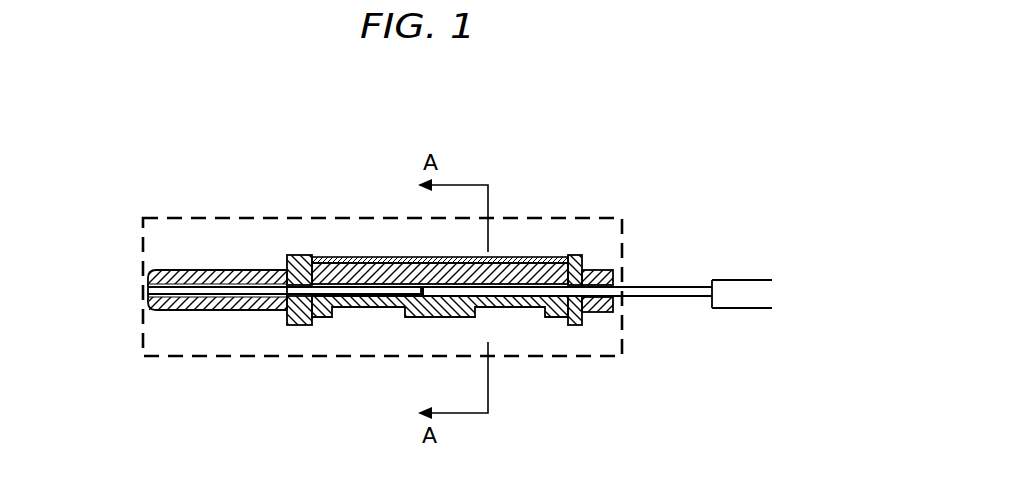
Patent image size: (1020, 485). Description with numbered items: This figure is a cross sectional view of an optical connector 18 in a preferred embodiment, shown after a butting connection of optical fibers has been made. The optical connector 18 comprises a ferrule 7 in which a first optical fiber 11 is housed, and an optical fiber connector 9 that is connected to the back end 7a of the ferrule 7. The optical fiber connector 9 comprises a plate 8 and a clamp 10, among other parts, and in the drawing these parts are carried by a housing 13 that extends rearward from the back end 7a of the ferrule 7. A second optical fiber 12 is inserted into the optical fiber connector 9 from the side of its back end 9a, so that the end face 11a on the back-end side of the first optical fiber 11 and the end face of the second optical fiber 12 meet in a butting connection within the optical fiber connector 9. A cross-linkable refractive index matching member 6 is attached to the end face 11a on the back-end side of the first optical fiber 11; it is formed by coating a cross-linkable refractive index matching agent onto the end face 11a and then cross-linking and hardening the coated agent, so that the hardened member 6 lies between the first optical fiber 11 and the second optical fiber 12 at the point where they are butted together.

The cross-linkable refractive index matching member 6 is at (407, 262).
The ferrule 7 is at (165, 310).
The back end of the ferrule 7a is at (280, 312).
The plate 8 is at (520, 258).
The optical fiber connector 9 is at (519, 335).
The back end of the optical fiber connector 9a is at (613, 312).
The clamp 10 is at (553, 258).
The first optical fiber 11 is at (265, 290).
The end face of the first optical fiber 11a is at (407, 295).
The second optical fiber 12 is at (657, 292).
The housing 13 is at (305, 253).
The optical connector 18 is at (352, 173).